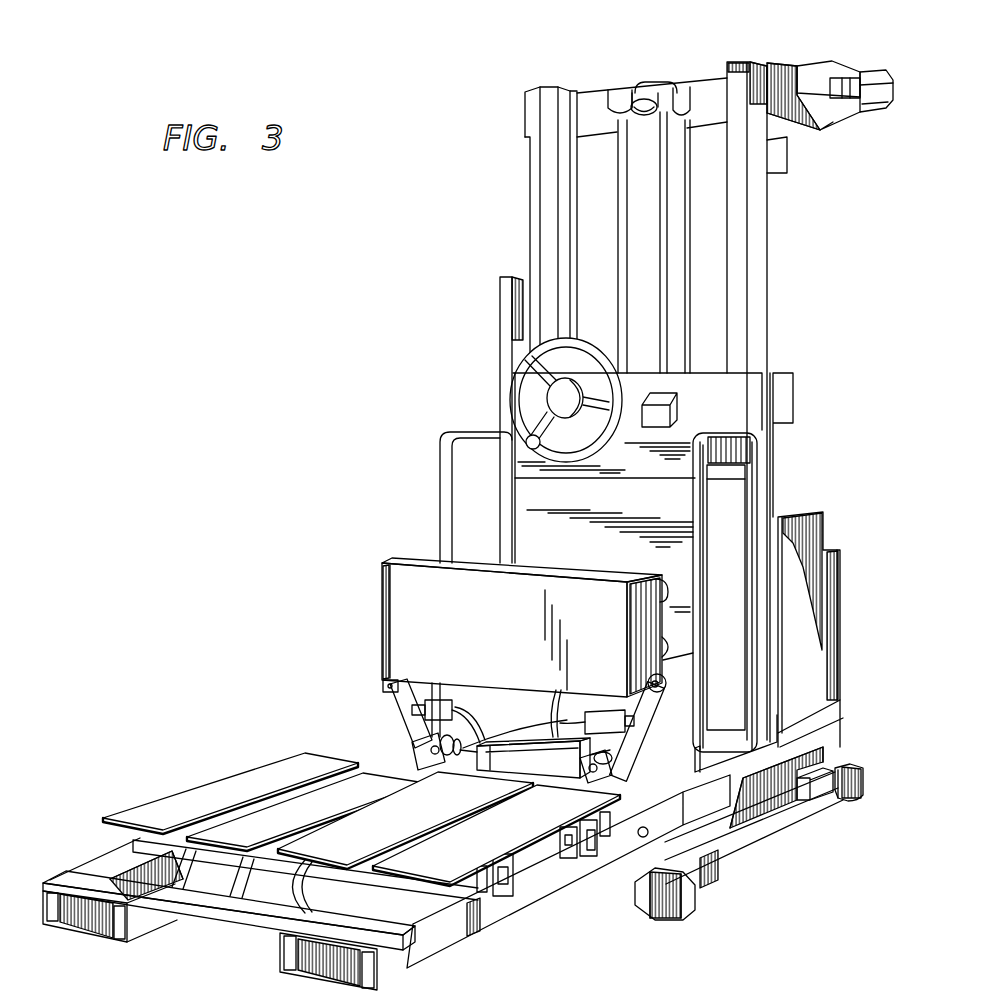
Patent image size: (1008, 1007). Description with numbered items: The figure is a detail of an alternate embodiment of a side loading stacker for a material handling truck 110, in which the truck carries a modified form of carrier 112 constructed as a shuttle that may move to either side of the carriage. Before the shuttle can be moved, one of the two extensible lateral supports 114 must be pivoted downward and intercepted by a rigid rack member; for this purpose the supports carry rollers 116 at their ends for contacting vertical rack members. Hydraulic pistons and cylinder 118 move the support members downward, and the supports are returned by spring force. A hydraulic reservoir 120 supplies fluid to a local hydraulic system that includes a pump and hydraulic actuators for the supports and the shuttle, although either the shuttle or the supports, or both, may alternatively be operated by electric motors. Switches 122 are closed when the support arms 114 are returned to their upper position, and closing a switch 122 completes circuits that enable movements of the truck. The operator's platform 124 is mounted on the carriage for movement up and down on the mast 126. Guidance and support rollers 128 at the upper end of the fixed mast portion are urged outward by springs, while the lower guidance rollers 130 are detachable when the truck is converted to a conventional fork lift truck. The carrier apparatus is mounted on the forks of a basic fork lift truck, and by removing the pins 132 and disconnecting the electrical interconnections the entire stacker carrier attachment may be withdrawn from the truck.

The truck 110 is at (822, 498).
The carrier 112 is at (505, 832).
The extensible lateral supports 114 is at (398, 690).
The rollers 116 is at (667, 628).
The hydraulic pistons and cylinder 118 is at (507, 743).
The hydraulic reservoir 120 is at (523, 595).
The switches 122 is at (445, 703).
The operator's platform 124 is at (522, 497).
The mast 126 is at (757, 226).
The guidance and support rollers 128 is at (880, 83).
The lower guidance rollers 130 is at (695, 905).
The pins 132 is at (643, 838).